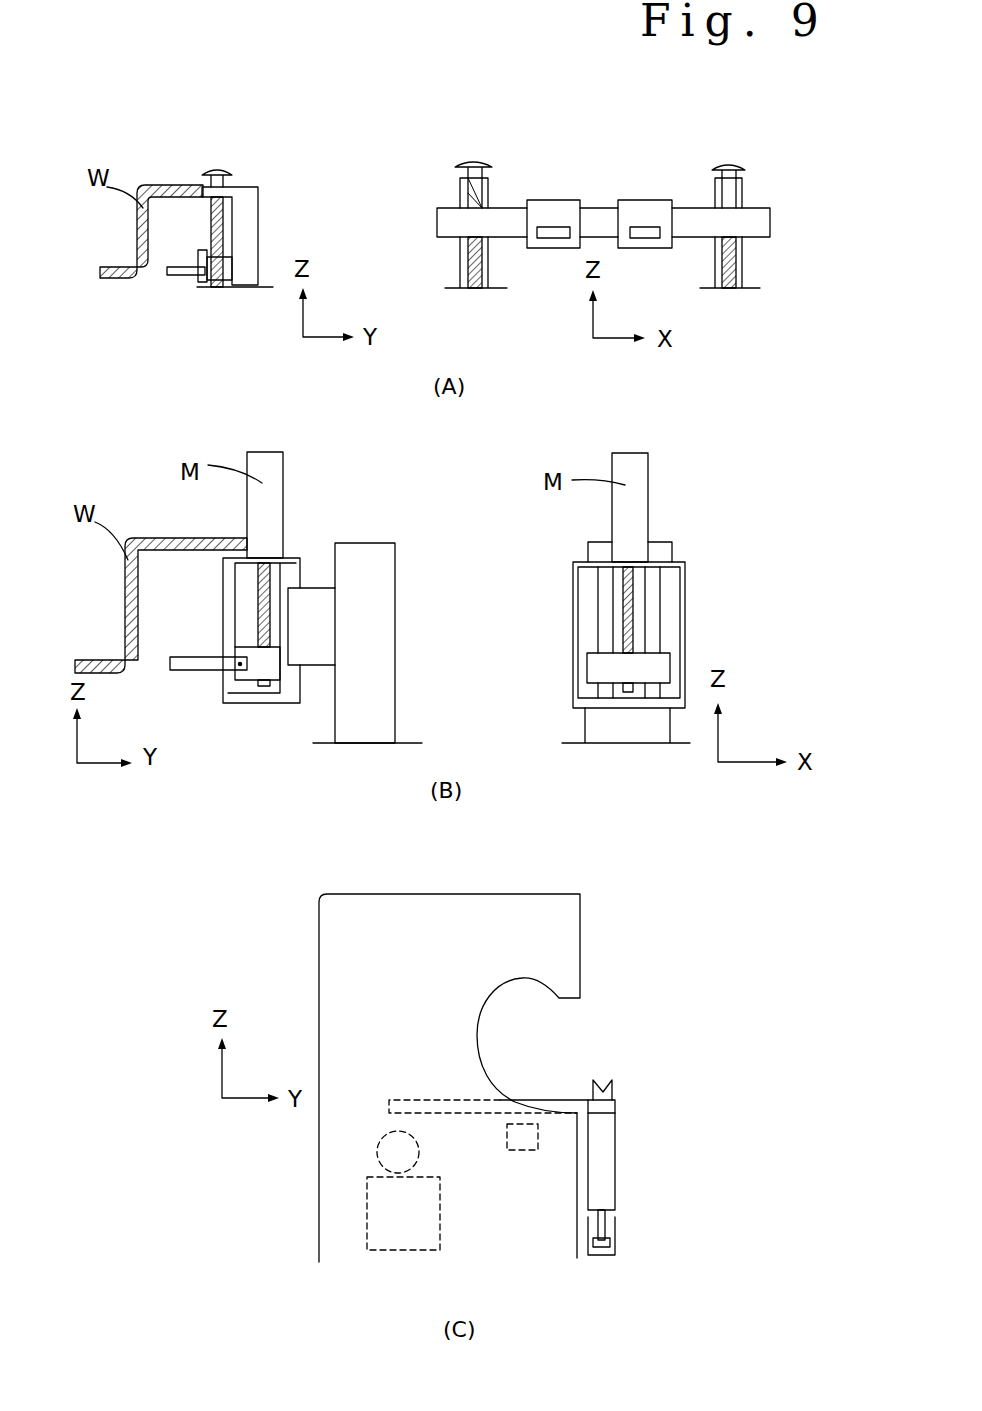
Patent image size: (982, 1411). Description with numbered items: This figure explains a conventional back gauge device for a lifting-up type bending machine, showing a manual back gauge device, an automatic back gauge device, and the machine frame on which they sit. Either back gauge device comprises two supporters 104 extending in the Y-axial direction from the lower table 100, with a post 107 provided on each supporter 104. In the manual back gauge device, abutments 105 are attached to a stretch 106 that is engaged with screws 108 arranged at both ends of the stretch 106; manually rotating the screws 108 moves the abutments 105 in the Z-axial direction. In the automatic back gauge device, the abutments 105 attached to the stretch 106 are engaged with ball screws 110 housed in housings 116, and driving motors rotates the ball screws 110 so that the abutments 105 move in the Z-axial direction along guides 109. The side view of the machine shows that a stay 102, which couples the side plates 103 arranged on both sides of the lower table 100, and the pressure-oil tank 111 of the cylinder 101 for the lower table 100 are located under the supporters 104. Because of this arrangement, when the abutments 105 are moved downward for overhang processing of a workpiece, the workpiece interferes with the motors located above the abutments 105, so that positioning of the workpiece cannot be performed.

The lower table 100 is at (602, 1144).
The cylinder 101 is at (617, 1235).
The stay 102 is at (518, 1145).
The side plate 103 is at (370, 937).
The supporter 104 is at (410, 1097).
The abutment 105 is at (177, 275).
The stretch 106 is at (212, 265).
The post 107 is at (248, 202).
The screw 108 is at (218, 167).
The guide 109 is at (603, 602).
The ball screw 110 is at (265, 582).
The pressure-oil tank 111 is at (391, 1225).
The housing 116 is at (290, 692).